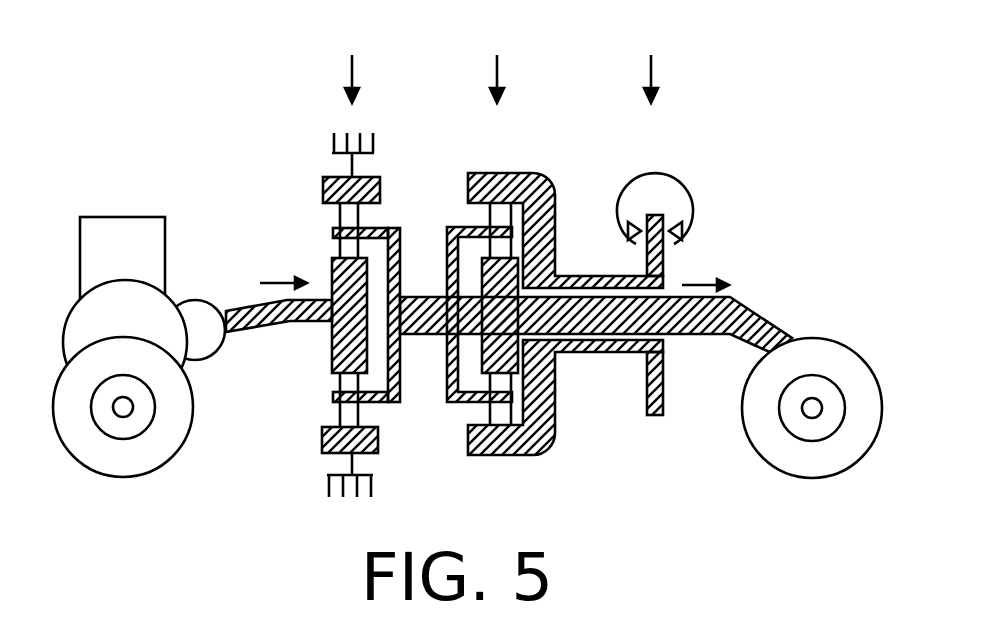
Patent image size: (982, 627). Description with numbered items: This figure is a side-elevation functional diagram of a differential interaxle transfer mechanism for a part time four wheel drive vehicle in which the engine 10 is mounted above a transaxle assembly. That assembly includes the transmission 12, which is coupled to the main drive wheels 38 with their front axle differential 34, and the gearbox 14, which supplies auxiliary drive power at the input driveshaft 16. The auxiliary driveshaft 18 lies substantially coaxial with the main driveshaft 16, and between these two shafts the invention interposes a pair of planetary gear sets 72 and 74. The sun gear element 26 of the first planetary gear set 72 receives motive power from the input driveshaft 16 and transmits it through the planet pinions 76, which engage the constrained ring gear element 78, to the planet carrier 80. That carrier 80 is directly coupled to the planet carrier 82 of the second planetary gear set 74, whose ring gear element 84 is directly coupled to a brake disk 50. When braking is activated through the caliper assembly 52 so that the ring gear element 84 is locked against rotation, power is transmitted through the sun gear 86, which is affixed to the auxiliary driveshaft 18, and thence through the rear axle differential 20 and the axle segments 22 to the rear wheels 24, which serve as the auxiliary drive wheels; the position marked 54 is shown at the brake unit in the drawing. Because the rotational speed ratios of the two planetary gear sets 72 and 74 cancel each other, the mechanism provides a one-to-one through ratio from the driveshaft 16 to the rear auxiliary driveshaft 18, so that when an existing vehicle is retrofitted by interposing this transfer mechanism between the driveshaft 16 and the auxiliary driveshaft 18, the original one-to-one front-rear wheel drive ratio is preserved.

The engine 10 is at (125, 217).
The transmission 12 is at (76, 318).
The gearbox 14 is at (203, 300).
The input driveshaft 16 is at (241, 333).
The auxiliary driveshaft 18 is at (720, 334).
The rear axle differential 20 is at (800, 437).
The axle segments 22 is at (802, 408).
The rear wheels 24 is at (800, 338).
The sun gear element 26 is at (332, 265).
The front axle differential 34 is at (155, 410).
The main drive wheels 38 is at (179, 449).
The brake disk 50 is at (664, 254).
The caliper assembly 52 is at (676, 176).
The lever position 54 is at (645, 57).
The planetary gear set 72 is at (350, 57).
The planetary gear set 74 is at (493, 57).
The planet pinions 76 is at (335, 229).
The ring gear element 78 is at (326, 179).
The planet carrier 80 is at (390, 228).
The planet carrier 82 is at (470, 403).
The ring gear element 84 is at (495, 173).
The sun gear 86 is at (553, 262).